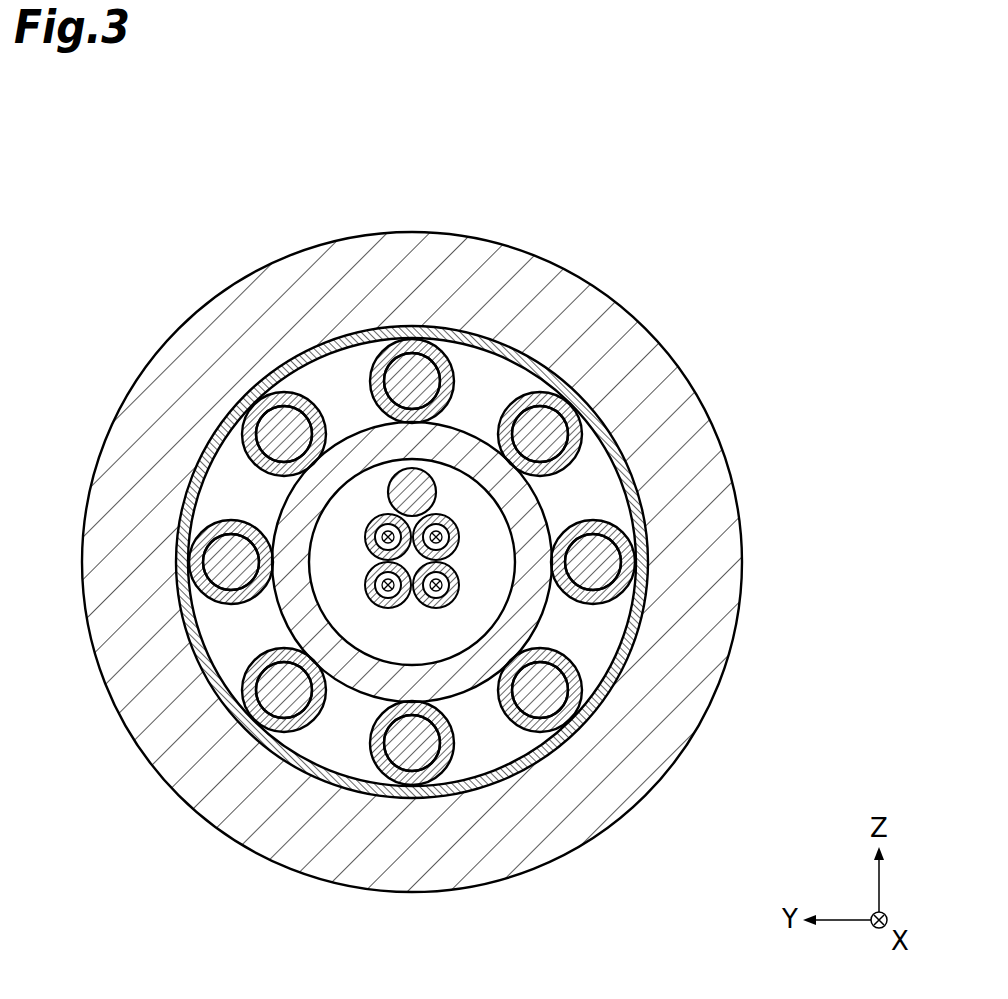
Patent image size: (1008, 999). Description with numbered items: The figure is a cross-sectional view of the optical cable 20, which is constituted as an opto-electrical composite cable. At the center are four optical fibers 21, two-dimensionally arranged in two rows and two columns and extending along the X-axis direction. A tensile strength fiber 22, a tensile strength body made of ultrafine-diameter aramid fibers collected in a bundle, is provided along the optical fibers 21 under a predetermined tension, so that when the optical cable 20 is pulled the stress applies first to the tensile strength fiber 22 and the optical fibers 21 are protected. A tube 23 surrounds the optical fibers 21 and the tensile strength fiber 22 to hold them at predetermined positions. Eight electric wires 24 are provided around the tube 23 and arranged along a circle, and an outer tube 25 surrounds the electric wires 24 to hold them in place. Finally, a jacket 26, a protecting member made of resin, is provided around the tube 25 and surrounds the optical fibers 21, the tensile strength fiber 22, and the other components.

The optical cable 20 is at (603, 232).
The optical fibers 21 is at (459, 546).
The tensile strength fiber 22 is at (473, 517).
The tube 23 is at (486, 686).
The electric wires 24 is at (250, 667).
The tube 25 is at (220, 690).
The jacket 26 is at (403, 243).